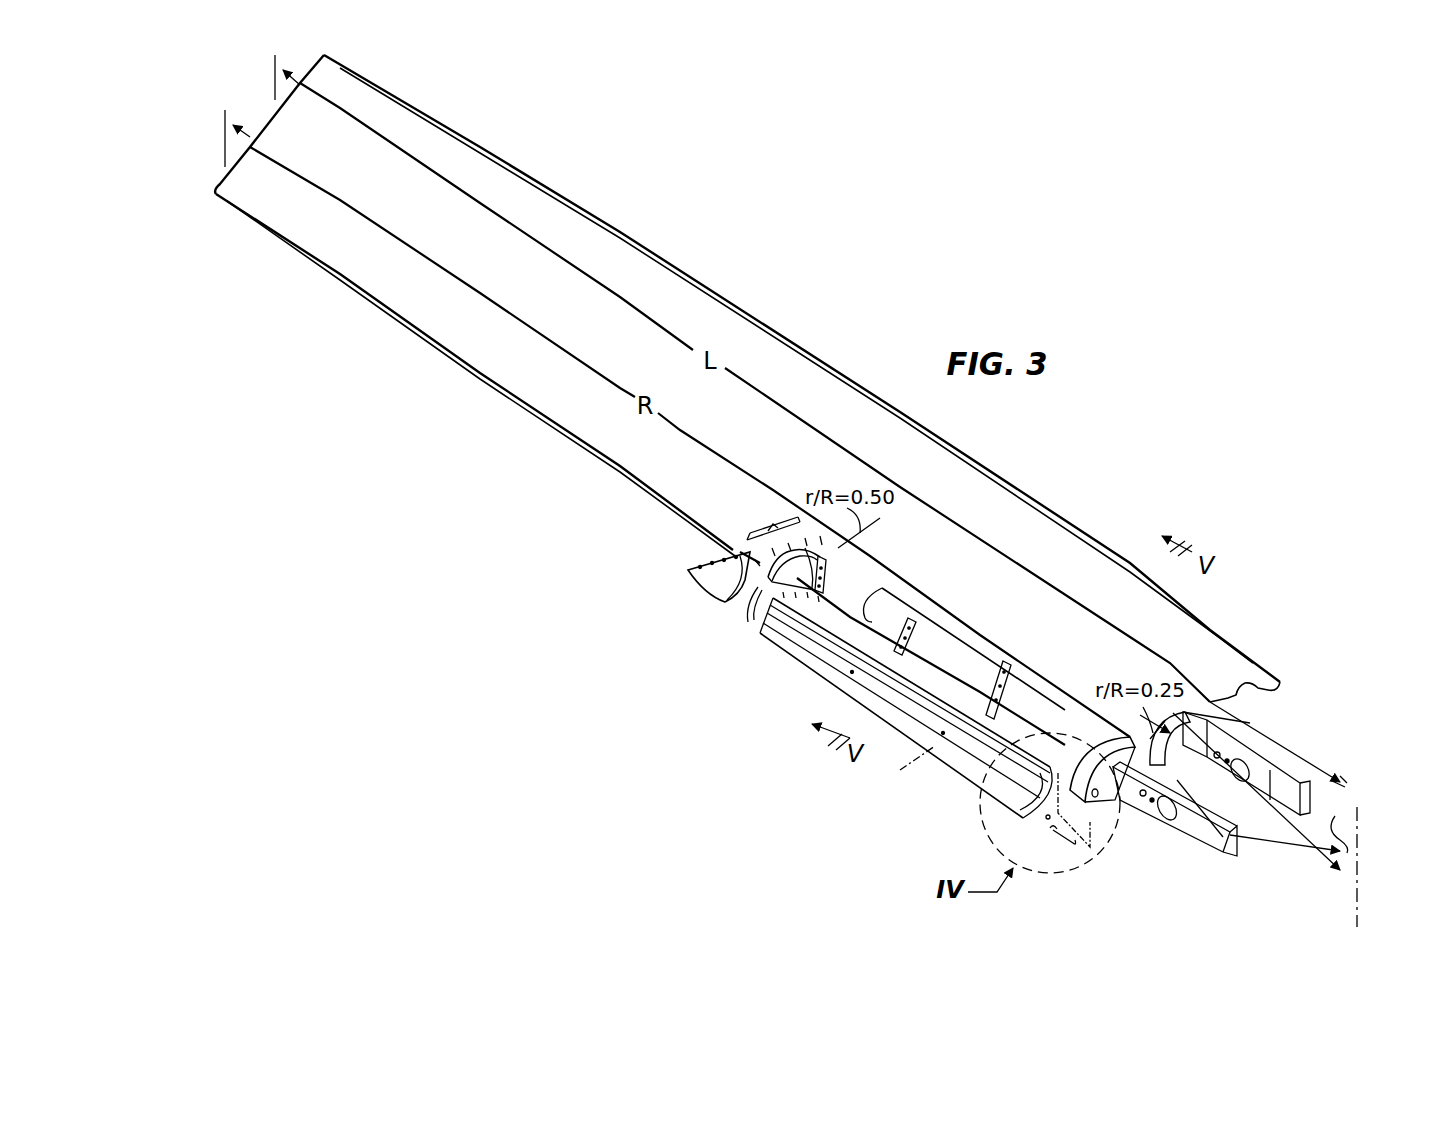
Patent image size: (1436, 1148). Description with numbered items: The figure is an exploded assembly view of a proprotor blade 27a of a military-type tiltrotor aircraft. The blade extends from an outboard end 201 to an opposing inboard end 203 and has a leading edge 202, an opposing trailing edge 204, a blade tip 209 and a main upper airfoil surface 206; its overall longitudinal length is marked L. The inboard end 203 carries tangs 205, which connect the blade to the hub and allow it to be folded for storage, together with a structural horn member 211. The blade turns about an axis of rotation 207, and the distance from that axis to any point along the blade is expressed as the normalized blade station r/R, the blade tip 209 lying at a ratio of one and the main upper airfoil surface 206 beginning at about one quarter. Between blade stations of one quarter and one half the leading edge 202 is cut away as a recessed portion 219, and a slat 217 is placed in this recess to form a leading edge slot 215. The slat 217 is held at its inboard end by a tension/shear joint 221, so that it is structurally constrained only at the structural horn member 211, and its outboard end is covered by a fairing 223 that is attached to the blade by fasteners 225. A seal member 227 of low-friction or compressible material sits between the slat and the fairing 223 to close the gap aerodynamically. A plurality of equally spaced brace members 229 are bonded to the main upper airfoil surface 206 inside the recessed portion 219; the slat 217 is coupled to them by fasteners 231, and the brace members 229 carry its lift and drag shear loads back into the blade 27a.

The outboard end 201 is at (258, 114).
The blade tip 209 is at (216, 180).
The trailing edge 204 is at (568, 195).
The leading edge 202 is at (464, 376).
The main upper airfoil surface 206 is at (607, 434).
The proprotor blade 27a is at (808, 338).
The inboard end 203 is at (1275, 707).
The tangs 205 is at (1283, 763).
The axis of rotation 207 is at (1360, 875).
The structural horn member 211 is at (1107, 730).
The leading edge slot 215 is at (830, 613).
The slat 217 is at (827, 672).
The recessed portion 219 is at (857, 582).
The tension/shear joint 221 is at (1052, 862).
The fairing 223 is at (708, 582).
The fasteners 225 is at (769, 516).
The seal member 227 is at (753, 617).
The brace members 229 is at (916, 636).
The fasteners 231 is at (900, 772).